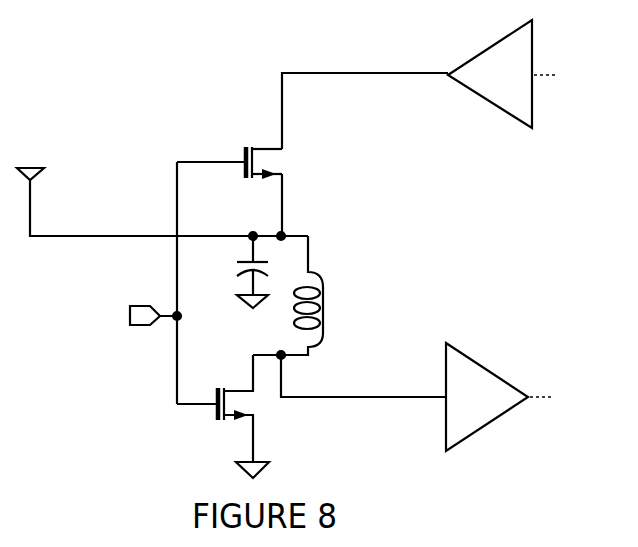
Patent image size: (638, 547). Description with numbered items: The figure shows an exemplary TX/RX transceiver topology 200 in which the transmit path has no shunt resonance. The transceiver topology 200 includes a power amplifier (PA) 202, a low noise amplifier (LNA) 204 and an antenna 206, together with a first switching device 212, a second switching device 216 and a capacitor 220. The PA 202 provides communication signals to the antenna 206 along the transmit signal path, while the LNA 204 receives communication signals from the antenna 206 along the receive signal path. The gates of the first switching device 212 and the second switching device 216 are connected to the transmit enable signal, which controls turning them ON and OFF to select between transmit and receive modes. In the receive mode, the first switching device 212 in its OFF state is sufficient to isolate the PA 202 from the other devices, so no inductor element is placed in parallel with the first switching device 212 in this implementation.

The TX/RX transceiver topology 200 is at (94, 108).
The power amplifier (PA) 202 is at (533, 48).
The low noise amplifier (LNA) 204 is at (502, 377).
The antenna 206 is at (28, 167).
The first switching device (SW1) 212 is at (226, 114).
The second switching device (SW2) 216 is at (336, 309).
The capacitor (C1) 220 is at (232, 284).